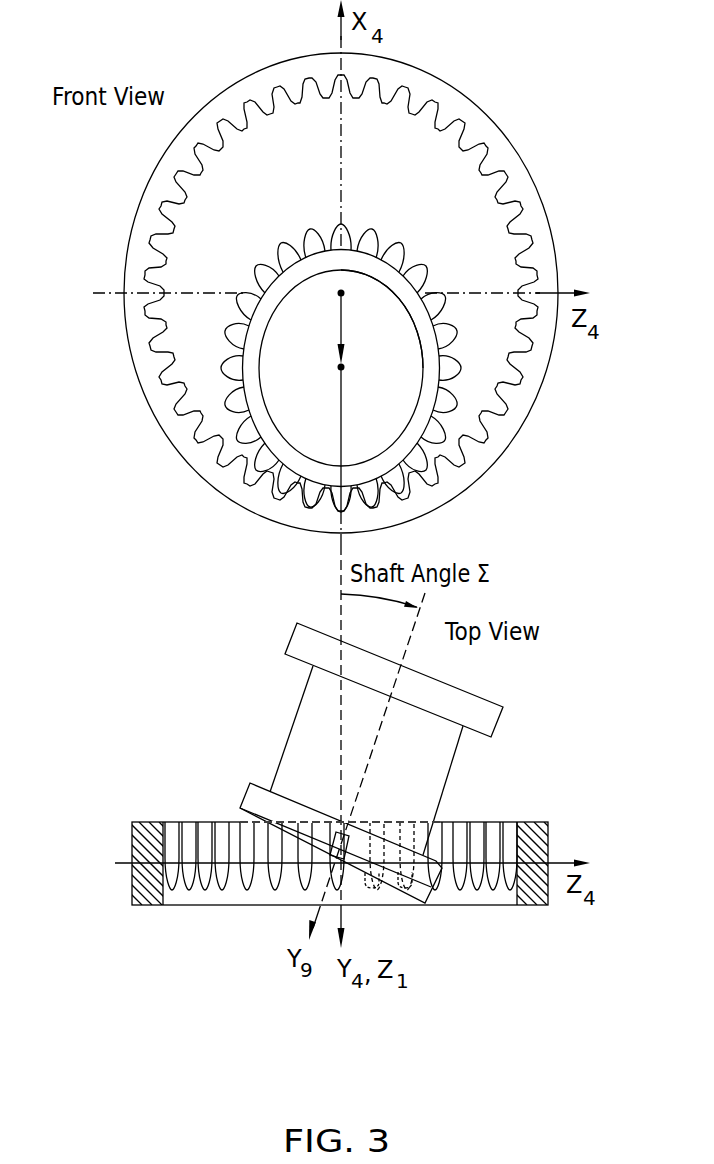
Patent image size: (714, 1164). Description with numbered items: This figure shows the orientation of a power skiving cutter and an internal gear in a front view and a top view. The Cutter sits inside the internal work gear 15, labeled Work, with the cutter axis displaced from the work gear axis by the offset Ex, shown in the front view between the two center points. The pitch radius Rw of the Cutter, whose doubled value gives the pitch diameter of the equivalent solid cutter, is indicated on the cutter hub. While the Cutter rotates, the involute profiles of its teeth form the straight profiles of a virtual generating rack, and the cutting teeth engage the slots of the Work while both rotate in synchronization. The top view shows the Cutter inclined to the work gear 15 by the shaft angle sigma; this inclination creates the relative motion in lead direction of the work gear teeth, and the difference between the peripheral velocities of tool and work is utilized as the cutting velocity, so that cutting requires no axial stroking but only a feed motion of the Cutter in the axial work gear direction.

The work gear 15 is at (520, 220).
The work Work is at (443, 103).
The cutter Cutter is at (258, 398).
The center distance offset Ex is at (341, 323).
The cutter pitch radius Rw is at (341, 403).